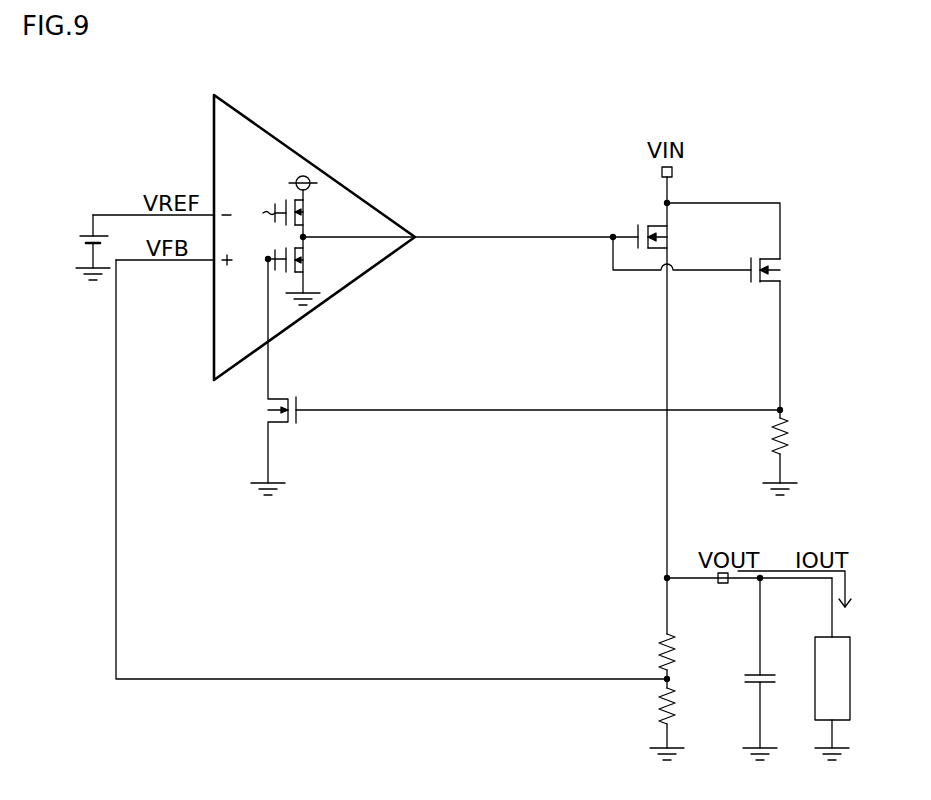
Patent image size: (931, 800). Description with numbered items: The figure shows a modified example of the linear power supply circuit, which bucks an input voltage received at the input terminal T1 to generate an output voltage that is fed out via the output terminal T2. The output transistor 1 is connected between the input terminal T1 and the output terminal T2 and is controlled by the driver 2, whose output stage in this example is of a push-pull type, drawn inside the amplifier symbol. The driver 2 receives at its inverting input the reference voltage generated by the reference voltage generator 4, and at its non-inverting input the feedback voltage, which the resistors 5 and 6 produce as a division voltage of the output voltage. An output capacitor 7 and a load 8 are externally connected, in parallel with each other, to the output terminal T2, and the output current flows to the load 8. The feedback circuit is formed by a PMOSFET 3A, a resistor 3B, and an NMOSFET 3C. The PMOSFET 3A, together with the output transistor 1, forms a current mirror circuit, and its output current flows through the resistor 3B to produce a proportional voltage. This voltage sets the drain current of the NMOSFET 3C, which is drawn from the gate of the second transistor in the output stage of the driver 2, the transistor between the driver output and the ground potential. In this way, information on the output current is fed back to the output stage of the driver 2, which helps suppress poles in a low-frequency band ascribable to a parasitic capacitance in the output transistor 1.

The output transistor 1 is at (673, 235).
The driver 2 is at (277, 137).
The PMOSFET 3A is at (787, 273).
The resistor 3B is at (789, 438).
The NMOSFET 3C is at (301, 403).
The reference voltage generator 4 is at (77, 238).
The resistor 5 is at (679, 653).
The resistor 6 is at (679, 705).
The output capacitor 7 is at (776, 681).
The load 8 is at (851, 681).
The input terminal T1 is at (673, 174).
The output terminal T2 is at (723, 584).